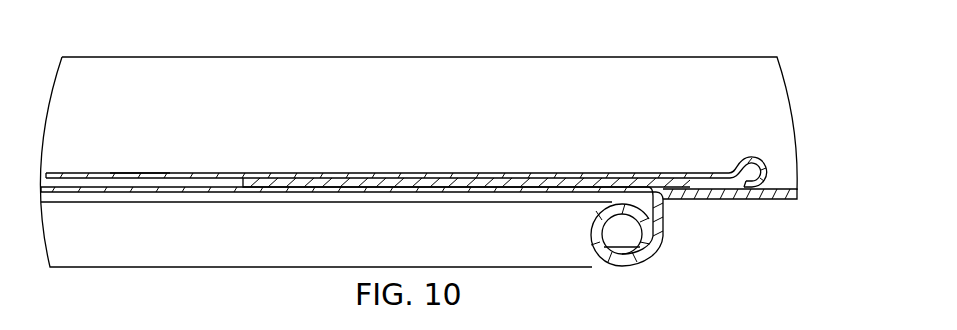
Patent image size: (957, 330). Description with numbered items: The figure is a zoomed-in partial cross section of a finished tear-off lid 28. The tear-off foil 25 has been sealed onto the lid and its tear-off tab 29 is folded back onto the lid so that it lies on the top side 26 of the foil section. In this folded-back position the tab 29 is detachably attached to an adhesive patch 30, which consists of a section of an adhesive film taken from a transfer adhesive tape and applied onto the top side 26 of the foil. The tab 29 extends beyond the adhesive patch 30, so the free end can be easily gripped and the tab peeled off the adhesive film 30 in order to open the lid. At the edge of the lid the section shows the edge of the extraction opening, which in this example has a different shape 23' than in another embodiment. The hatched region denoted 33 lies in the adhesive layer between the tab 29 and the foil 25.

The top side of the foil section 26 is at (90, 186).
The tear-off tab 29 is at (138, 173).
The adhesive patch 30 is at (321, 185).
The adhesive portion 33 is at (413, 183).
The tear-off foil 25 is at (161, 193).
The tear-off lid 28 is at (777, 193).
The edge of the extraction opening 23' is at (616, 252).